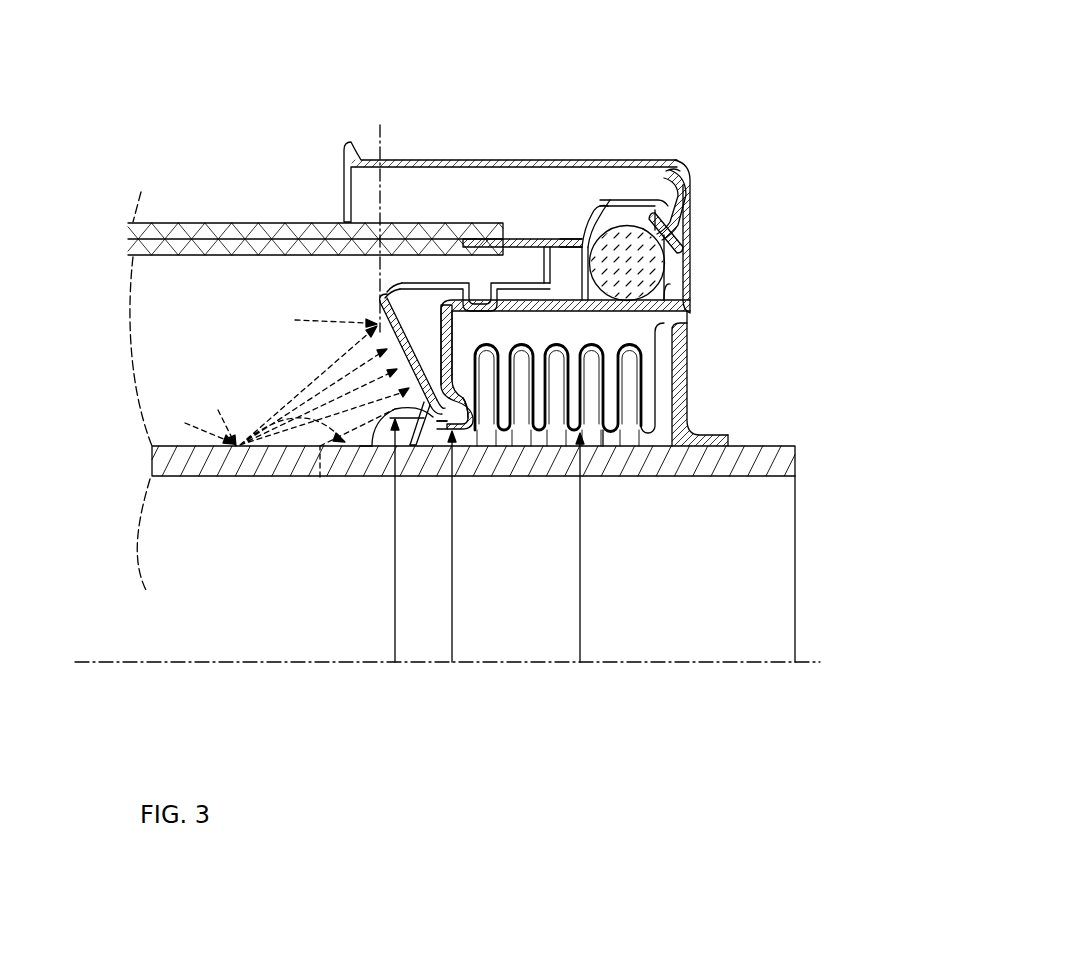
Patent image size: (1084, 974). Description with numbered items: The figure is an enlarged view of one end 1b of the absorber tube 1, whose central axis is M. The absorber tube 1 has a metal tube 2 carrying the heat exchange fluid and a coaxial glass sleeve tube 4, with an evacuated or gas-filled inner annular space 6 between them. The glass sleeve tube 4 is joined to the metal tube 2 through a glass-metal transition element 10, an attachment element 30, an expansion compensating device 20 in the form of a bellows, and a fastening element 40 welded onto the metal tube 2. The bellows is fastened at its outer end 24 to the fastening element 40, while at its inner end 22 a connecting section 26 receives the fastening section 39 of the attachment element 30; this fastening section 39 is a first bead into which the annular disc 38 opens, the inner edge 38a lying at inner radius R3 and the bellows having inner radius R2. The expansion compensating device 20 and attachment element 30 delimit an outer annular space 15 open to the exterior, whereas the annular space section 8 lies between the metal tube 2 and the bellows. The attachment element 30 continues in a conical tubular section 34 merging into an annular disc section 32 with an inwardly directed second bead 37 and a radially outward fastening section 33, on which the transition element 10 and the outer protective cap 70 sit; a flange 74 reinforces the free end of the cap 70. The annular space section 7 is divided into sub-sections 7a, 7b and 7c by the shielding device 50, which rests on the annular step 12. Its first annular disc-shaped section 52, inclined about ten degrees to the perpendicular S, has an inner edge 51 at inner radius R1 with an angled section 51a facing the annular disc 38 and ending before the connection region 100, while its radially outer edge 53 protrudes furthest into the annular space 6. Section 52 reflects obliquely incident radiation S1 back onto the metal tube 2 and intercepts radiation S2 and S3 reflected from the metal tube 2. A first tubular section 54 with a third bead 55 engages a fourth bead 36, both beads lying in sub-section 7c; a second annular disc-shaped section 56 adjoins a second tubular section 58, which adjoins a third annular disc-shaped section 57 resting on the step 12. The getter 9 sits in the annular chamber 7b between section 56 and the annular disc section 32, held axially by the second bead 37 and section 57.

The absorber tube 1 is at (862, 36).
The end of the absorber tube 1b is at (829, 151).
The metal tube 2 is at (797, 463).
The glass sleeve tube 4 is at (160, 223).
The inner annular space 6 is at (176, 342).
The annular space section 7 is at (530, 283).
The annular space sub-section 7a is at (460, 285).
The annular chamber 7b is at (672, 285).
The inner annular space section 7c is at (483, 298).
The annular space section 8 is at (617, 440).
The getter 9 is at (655, 271).
The glass-metal transition element 10 is at (646, 160).
The annular step 12 is at (661, 160).
The outer annular space 15 is at (655, 325).
The expansion compensating device 20 is at (656, 367).
The inner end 22 is at (432, 432).
The outer end 24 is at (690, 329).
The connecting section 26 is at (432, 432).
The attachment element 30 is at (437, 333).
The annular disc section 32 is at (674, 227).
The fastening section 33 is at (678, 222).
The tubular section 34 is at (688, 307).
The fourth bead 36 is at (522, 283).
The second bead 37 is at (690, 180).
The annular disc 38 is at (236, 447).
The inner edge 38a is at (412, 477).
The fastening section 39 is at (473, 420).
The fastening element 40 is at (692, 428).
The shielding device 50 is at (372, 313).
The inner edge 51 is at (404, 477).
The angled section 51a is at (408, 477).
The first annular disc-shaped section 52 is at (374, 362).
The radially outer edge 53 is at (380, 290).
The first tubular section 54 is at (395, 291).
The third bead 55 is at (478, 286).
The second annular disc-shaped section 56 is at (586, 202).
The third annular disc-shaped section 57 is at (682, 172).
The second tubular section 58 is at (574, 224).
The outer protective cap 70 is at (565, 215).
The flange 74 is at (338, 152).
The connection region 100 is at (358, 447).
The central axis M is at (461, 650).
The inner radius R1 is at (408, 540).
The inner radius R2 is at (594, 547).
The inner radius R3 is at (466, 546).
The perpendicular S is at (344, 146).
The obliquely incident radiation S1 is at (295, 320).
The radiation S2 is at (218, 415).
The radiation S3 is at (185, 423).